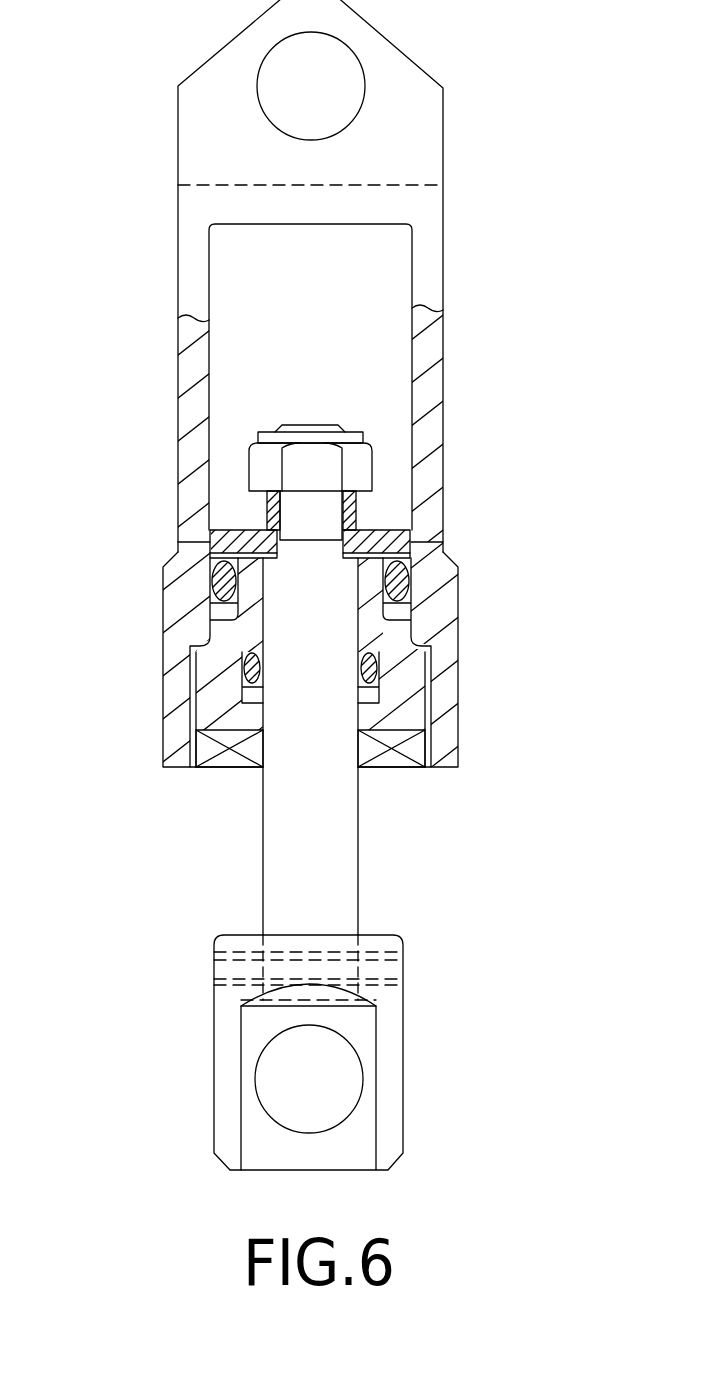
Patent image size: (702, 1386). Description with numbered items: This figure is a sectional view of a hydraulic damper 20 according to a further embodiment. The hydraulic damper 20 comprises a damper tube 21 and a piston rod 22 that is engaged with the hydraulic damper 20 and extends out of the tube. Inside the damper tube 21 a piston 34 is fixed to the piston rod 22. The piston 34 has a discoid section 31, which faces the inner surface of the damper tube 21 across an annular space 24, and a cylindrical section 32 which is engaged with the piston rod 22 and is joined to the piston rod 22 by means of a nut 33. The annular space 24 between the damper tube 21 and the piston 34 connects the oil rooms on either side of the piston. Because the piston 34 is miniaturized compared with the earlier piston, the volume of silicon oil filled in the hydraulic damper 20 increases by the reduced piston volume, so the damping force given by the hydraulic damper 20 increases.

The hydraulic damper 20 is at (447, 110).
The damper tube 21 is at (188, 275).
The piston rod 22 is at (340, 848).
The annular space 24 is at (178, 543).
The discoid section 31 is at (277, 527).
The cylindrical section 32 is at (268, 505).
The nut 33 is at (360, 467).
The piston 34 is at (409, 534).